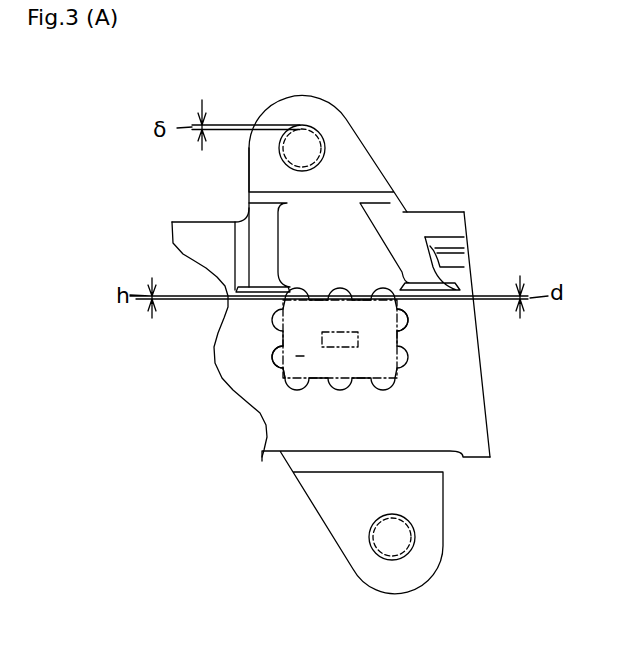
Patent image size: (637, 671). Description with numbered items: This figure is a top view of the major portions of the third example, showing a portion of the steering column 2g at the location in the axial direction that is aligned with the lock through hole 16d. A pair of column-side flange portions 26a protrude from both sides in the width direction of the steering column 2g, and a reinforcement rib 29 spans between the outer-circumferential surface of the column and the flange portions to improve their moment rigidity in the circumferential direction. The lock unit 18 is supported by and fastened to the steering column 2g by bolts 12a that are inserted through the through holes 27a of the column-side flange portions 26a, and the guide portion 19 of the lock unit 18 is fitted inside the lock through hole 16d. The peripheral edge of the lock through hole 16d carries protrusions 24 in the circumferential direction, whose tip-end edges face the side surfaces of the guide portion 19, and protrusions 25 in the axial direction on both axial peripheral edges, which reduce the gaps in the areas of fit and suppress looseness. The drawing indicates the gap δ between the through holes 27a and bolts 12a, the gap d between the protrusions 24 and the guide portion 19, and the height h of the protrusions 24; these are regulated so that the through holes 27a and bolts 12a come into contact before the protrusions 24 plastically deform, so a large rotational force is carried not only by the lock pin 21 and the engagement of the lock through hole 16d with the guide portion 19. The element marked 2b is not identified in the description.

The bracket body 2b is at (286, 447).
The steering column 2g is at (498, 432).
The bolts 12a is at (318, 160).
The lock through hole 16d is at (282, 381).
The lock unit 18 is at (380, 366).
The guide portion 19 is at (300, 365).
The lock pin 21 is at (345, 347).
The protrusions in the circumferential direction 24 is at (343, 387).
The protrusions in the axial direction 25 is at (276, 341).
The column-side flange portions 26a is at (340, 142).
The through holes 27a is at (290, 130).
The reinforcement rib 29 is at (260, 250).